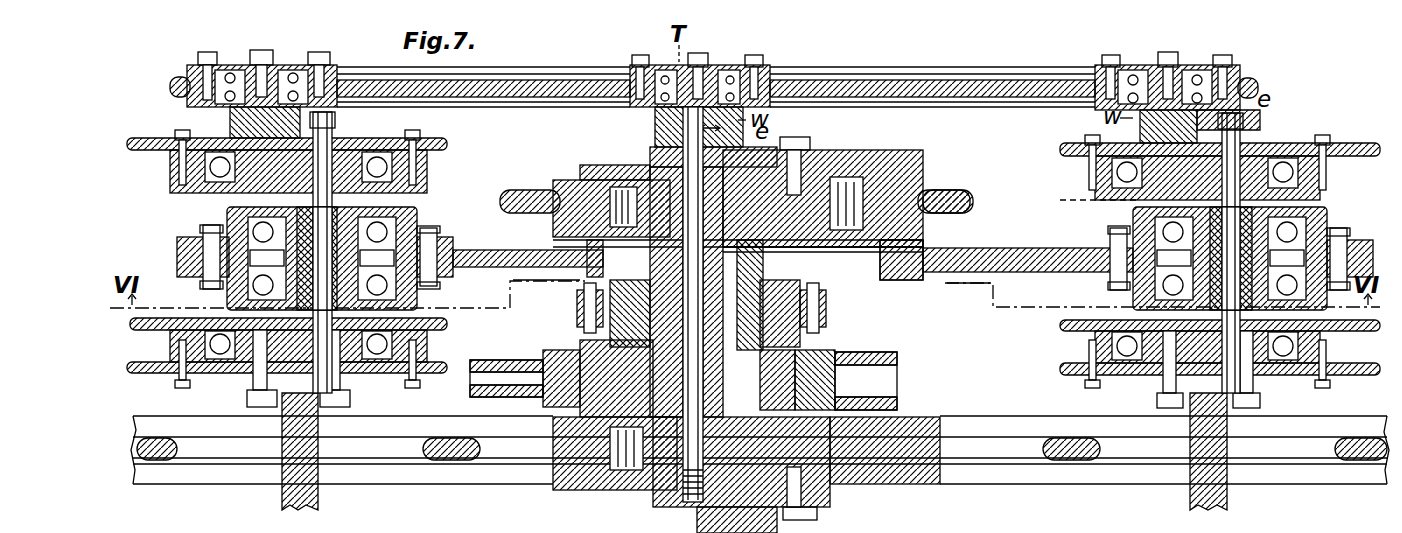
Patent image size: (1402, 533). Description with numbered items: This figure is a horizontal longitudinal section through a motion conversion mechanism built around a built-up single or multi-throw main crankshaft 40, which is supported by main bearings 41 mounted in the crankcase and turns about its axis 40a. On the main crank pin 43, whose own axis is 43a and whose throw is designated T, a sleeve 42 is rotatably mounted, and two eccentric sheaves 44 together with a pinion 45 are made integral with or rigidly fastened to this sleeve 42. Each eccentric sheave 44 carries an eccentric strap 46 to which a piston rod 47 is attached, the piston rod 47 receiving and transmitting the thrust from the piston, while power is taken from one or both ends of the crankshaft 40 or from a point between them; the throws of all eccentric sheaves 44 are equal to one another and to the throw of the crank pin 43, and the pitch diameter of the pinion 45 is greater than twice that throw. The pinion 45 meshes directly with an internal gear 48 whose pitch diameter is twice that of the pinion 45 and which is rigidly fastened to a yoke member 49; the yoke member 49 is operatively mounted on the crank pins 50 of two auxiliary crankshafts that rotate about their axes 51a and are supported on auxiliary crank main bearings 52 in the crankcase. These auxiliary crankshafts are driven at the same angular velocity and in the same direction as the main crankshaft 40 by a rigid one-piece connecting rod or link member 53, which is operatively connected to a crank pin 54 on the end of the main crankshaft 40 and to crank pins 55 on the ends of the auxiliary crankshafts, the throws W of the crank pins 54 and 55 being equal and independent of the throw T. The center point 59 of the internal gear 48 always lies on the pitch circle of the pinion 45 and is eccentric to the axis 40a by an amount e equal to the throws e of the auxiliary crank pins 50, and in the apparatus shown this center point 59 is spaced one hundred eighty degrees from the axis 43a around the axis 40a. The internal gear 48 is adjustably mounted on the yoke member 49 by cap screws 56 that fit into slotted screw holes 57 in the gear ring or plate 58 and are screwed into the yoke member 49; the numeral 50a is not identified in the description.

The crankshaft 40 is at (757, 447).
The axis of the main crankshaft 40a is at (600, 168).
The main bearings 41 is at (863, 170).
The sleeve 42 is at (800, 330).
The crank pin 43 is at (833, 347).
The axis of the main crank pin 43a is at (655, 150).
The eccentric sheaves 44 is at (593, 343).
The pinion 45 is at (765, 290).
The eccentric strap 46 is at (553, 347).
The piston rod 47 is at (505, 362).
The internal gear 48 is at (903, 210).
The yoke member 49 is at (465, 248).
The crank pins of auxiliary crankshafts 50 is at (222, 222).
The bearing cap 50a is at (1255, 117).
The axes of rotation of the auxiliary crankshafts 51a is at (1100, 200).
The auxiliary crank main bearings 52 is at (425, 165).
The connecting rod or link member 53 is at (560, 87).
The crank pin on the end of the main crankshaft 54 is at (717, 63).
The crank pins on the ends of the auxiliary crankshafts 55 is at (277, 63).
The cap screws 56 is at (590, 278).
The slotted screw holes 57 is at (293, 493).
The gear plate 58 is at (933, 247).
The center point of the internal gear 59 is at (763, 265).